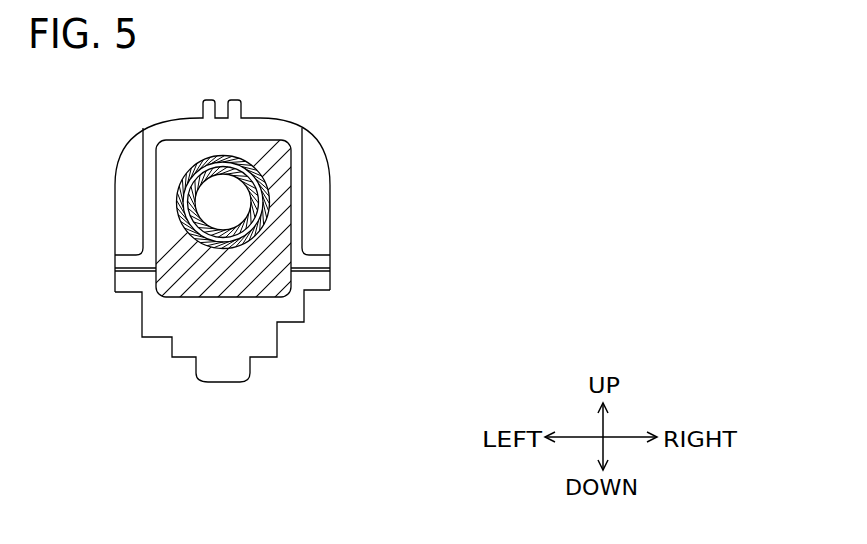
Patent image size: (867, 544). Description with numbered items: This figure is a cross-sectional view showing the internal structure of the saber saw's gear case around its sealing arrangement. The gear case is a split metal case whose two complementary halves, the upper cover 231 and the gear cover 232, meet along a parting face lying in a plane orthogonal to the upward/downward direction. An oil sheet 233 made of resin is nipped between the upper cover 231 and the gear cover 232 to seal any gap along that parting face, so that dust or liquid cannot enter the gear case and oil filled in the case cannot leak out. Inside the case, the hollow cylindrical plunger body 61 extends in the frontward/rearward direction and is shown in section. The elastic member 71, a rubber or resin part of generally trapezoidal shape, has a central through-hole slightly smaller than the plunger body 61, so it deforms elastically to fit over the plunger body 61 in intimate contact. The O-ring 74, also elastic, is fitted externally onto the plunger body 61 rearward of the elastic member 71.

The upper cover 231 is at (250, 130).
The gear cover 232 is at (267, 348).
The oil sheet 233 is at (330, 269).
The elastic member 71 is at (275, 152).
The plunger body 61 is at (243, 171).
The O-ring 74 is at (260, 200).